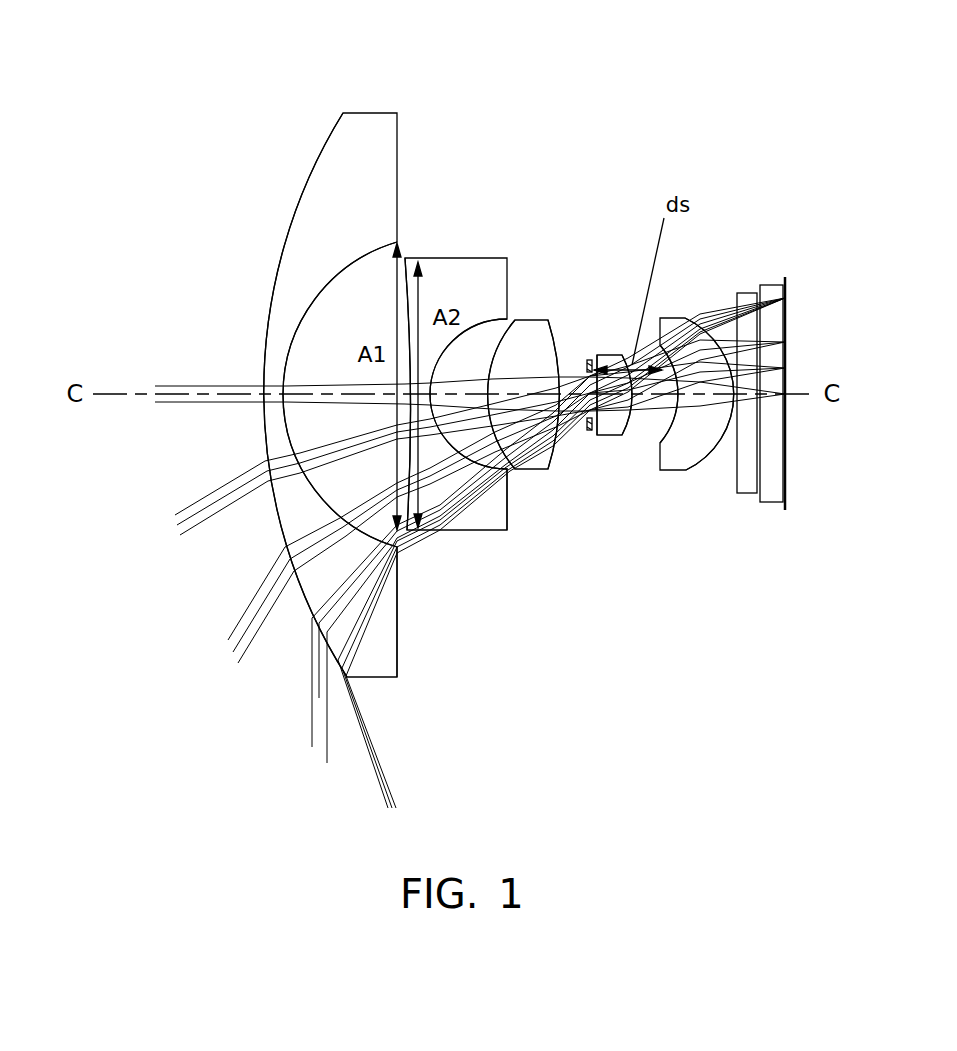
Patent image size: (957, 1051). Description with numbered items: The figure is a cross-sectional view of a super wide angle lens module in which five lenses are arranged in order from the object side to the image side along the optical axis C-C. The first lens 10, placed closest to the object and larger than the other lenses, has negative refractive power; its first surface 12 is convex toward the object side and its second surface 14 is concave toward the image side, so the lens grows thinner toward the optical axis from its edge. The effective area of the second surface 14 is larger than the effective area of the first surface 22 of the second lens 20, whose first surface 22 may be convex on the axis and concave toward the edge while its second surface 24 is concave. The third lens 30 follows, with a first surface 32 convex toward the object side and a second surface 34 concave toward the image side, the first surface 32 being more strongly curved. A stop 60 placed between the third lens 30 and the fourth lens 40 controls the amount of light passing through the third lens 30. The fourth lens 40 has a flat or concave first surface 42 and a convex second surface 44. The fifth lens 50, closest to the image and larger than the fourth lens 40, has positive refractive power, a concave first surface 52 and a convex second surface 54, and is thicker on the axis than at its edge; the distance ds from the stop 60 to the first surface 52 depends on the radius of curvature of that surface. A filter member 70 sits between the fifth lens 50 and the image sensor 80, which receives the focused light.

The first lens 10 is at (366, 118).
The first surface of the first lens 12 is at (307, 603).
The second surface of the first lens 14 is at (398, 645).
The second lens 20 is at (458, 268).
The first surface of the second lens 22 is at (405, 530).
The second surface of the second lens 24 is at (510, 500).
The third lens 30 is at (528, 325).
The first surface of the third lens 32 is at (519, 470).
The second surface of the third lens 34 is at (557, 447).
The fourth lens 40 is at (612, 355).
The first surface of the fourth lens 42 is at (600, 437).
The second surface of the fourth lens 44 is at (640, 436).
The fifth lens 50 is at (675, 318).
The first surface of the fifth lens 52 is at (661, 444).
The second surface of the fifth lens 54 is at (720, 448).
The stop 60 is at (587, 356).
The filter member 70 is at (746, 296).
The image sensor 80 is at (773, 293).